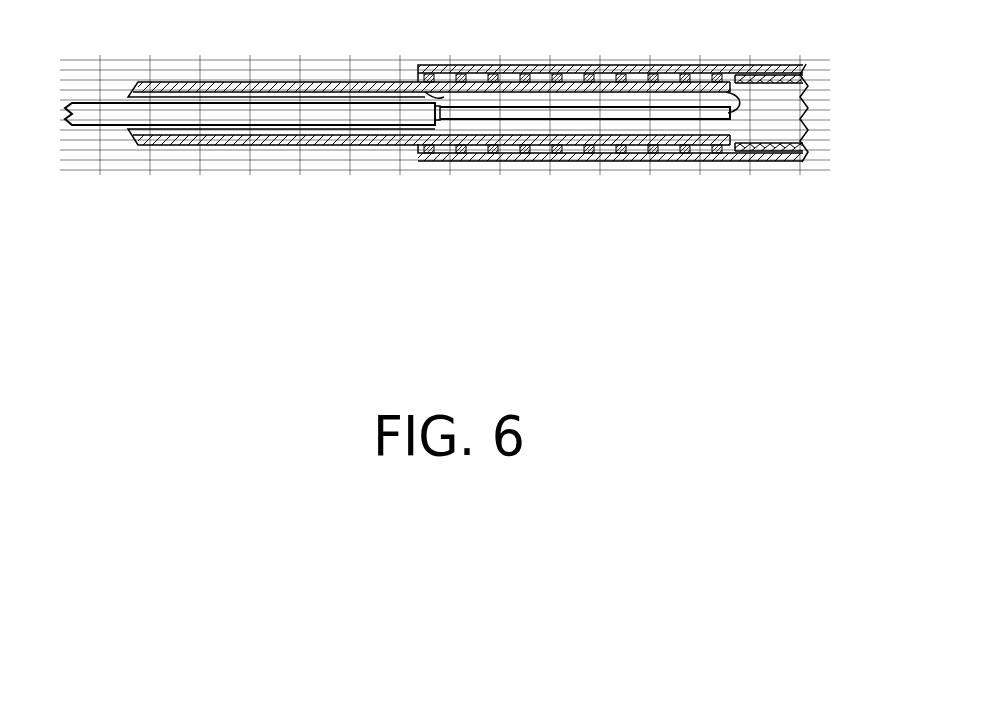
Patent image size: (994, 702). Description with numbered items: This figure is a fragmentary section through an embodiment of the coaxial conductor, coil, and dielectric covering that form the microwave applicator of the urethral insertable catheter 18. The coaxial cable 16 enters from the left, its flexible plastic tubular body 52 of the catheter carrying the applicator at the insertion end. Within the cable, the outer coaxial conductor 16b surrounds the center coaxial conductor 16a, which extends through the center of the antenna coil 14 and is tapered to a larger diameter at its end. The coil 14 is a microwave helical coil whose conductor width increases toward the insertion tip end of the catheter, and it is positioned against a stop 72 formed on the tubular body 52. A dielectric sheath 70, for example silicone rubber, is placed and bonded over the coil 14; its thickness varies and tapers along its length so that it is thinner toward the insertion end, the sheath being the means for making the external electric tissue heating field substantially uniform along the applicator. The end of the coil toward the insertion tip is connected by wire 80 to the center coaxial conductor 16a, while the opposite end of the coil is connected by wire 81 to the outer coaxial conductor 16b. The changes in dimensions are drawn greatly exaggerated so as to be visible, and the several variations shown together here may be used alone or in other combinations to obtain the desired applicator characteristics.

The antenna coil 14 is at (558, 80).
The coaxial cable 16 is at (404, 62).
The center coaxial conductor 16a is at (640, 108).
The outer coaxial conductor 16b is at (232, 115).
The catheter 18 is at (429, 115).
The tubular body 52 is at (155, 138).
The dielectric sheath 70 is at (468, 72).
The stop 72 is at (748, 74).
The wire 80 is at (733, 107).
The wire 81 is at (437, 102).